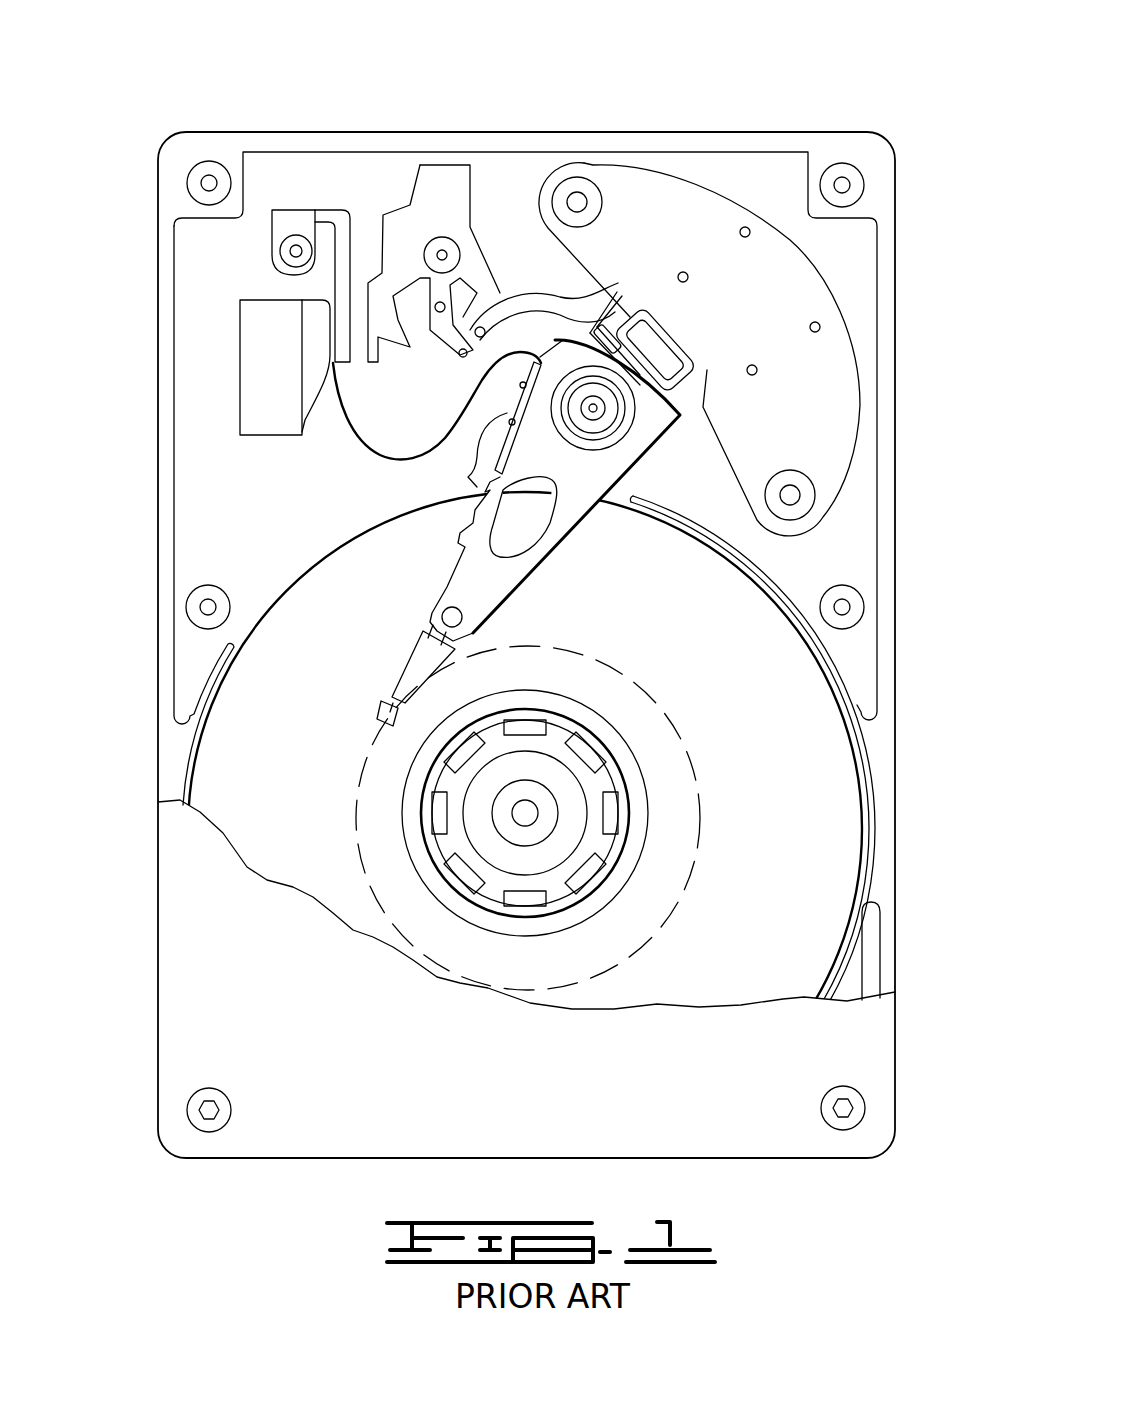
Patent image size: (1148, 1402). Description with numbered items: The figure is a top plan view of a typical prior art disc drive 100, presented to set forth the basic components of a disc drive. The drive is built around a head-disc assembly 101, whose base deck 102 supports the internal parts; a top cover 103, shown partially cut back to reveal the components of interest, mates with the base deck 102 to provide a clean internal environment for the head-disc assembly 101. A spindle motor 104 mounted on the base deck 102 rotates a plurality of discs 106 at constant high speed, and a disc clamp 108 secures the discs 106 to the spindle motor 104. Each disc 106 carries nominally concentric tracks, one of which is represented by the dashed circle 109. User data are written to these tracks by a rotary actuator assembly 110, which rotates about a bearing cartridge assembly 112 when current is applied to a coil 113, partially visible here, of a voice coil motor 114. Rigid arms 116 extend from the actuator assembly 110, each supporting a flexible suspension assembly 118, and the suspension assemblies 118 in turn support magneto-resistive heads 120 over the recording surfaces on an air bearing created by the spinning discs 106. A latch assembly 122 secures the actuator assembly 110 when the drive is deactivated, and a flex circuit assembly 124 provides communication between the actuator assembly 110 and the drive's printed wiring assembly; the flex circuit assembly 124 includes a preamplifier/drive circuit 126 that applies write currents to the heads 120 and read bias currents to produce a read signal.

The disc drive 100 is at (278, 110).
The head-disc assembly 101 is at (213, 265).
The base deck 102 is at (265, 505).
The top cover 103 is at (220, 971).
The spindle motor 104 is at (540, 845).
The discs 106 is at (784, 902).
The disc clamp 108 is at (420, 866).
The track 109 is at (665, 715).
The rotary actuator assembly 110 is at (567, 490).
The bearing cartridge assembly 112 is at (603, 425).
The coil 113 is at (690, 365).
The voice coil motor 114 is at (633, 238).
The rigid arms 116 is at (460, 592).
The flexible suspension assembly 118 is at (408, 677).
The heads 120 is at (377, 713).
The latch assembly 122 is at (443, 190).
The flex circuit assembly 124 is at (376, 466).
The preamplifier/drive circuit 126 is at (470, 465).